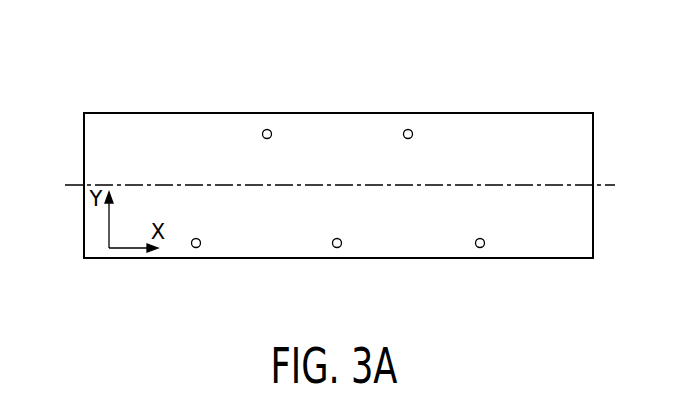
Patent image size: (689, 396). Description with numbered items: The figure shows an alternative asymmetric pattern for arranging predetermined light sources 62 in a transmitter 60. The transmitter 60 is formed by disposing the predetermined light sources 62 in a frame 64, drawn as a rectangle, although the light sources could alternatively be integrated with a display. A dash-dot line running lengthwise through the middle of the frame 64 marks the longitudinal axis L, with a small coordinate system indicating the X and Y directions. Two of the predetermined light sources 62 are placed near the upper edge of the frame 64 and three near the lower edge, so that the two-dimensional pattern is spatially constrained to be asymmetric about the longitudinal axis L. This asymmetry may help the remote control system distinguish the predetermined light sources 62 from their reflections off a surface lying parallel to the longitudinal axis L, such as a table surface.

The transmitter 60 is at (508, 124).
The predetermined light sources 62 is at (268, 129).
The frame 64 is at (153, 124).
The longitudinal axis L is at (76, 191).